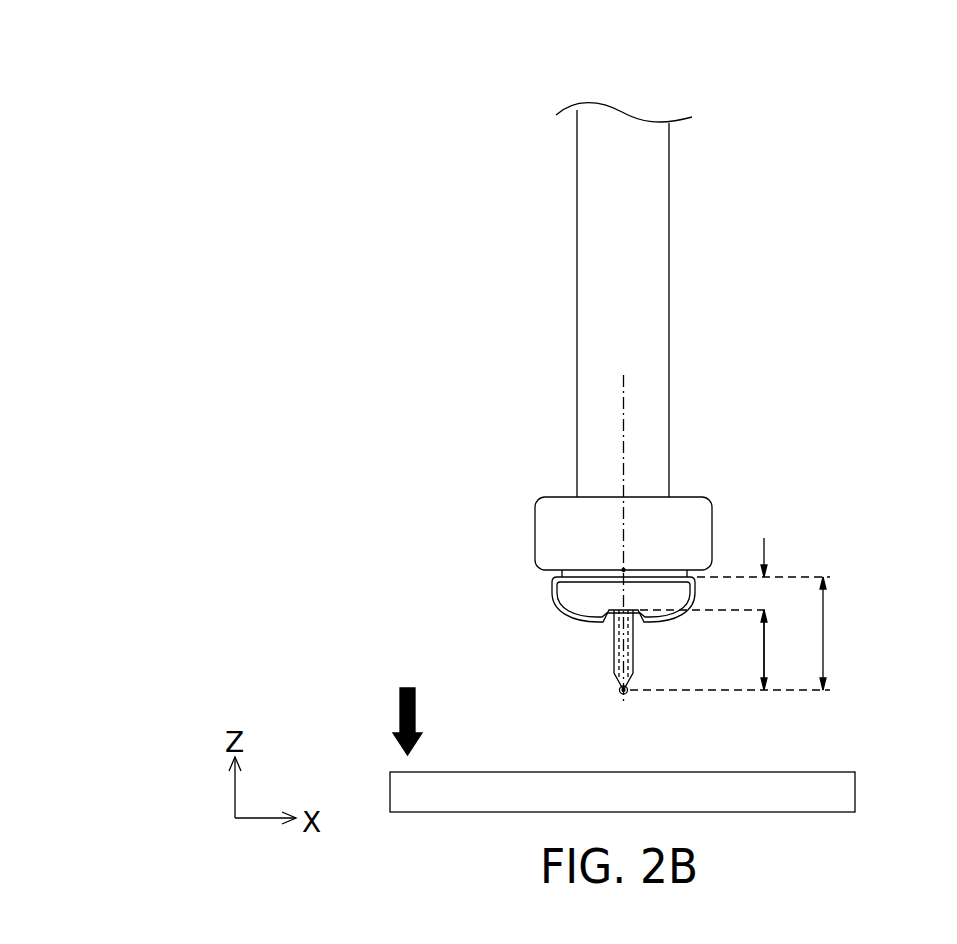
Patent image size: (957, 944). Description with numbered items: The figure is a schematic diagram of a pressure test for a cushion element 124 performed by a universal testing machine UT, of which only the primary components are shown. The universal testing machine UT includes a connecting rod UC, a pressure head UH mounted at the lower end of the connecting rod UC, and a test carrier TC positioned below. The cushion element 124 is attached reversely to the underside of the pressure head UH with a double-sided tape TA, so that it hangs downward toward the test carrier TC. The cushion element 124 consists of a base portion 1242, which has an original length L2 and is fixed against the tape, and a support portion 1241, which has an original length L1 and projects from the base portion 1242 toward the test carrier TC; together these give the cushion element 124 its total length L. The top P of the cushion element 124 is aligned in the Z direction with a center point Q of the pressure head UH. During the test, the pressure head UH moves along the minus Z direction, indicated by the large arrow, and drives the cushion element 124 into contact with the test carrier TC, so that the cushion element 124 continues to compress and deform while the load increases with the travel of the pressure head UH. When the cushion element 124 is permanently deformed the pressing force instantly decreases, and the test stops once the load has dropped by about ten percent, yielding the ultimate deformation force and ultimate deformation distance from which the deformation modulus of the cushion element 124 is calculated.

The universal testing machine UT is at (338, 67).
The connecting rod UC is at (670, 280).
The pressure head UH is at (534, 540).
The double-sided tape TA is at (560, 578).
The cushion element 124 is at (569, 655).
The base portion 1242 is at (551, 599).
The support portion 1241 is at (613, 651).
The top of the cushion element P is at (627, 694).
The center point of the pressure head Q is at (624, 570).
The total length L is at (812, 633).
The original length of the support portion L1 is at (746, 650).
The original length of the base portion L2 is at (746, 614).
The test carrier TC is at (840, 793).